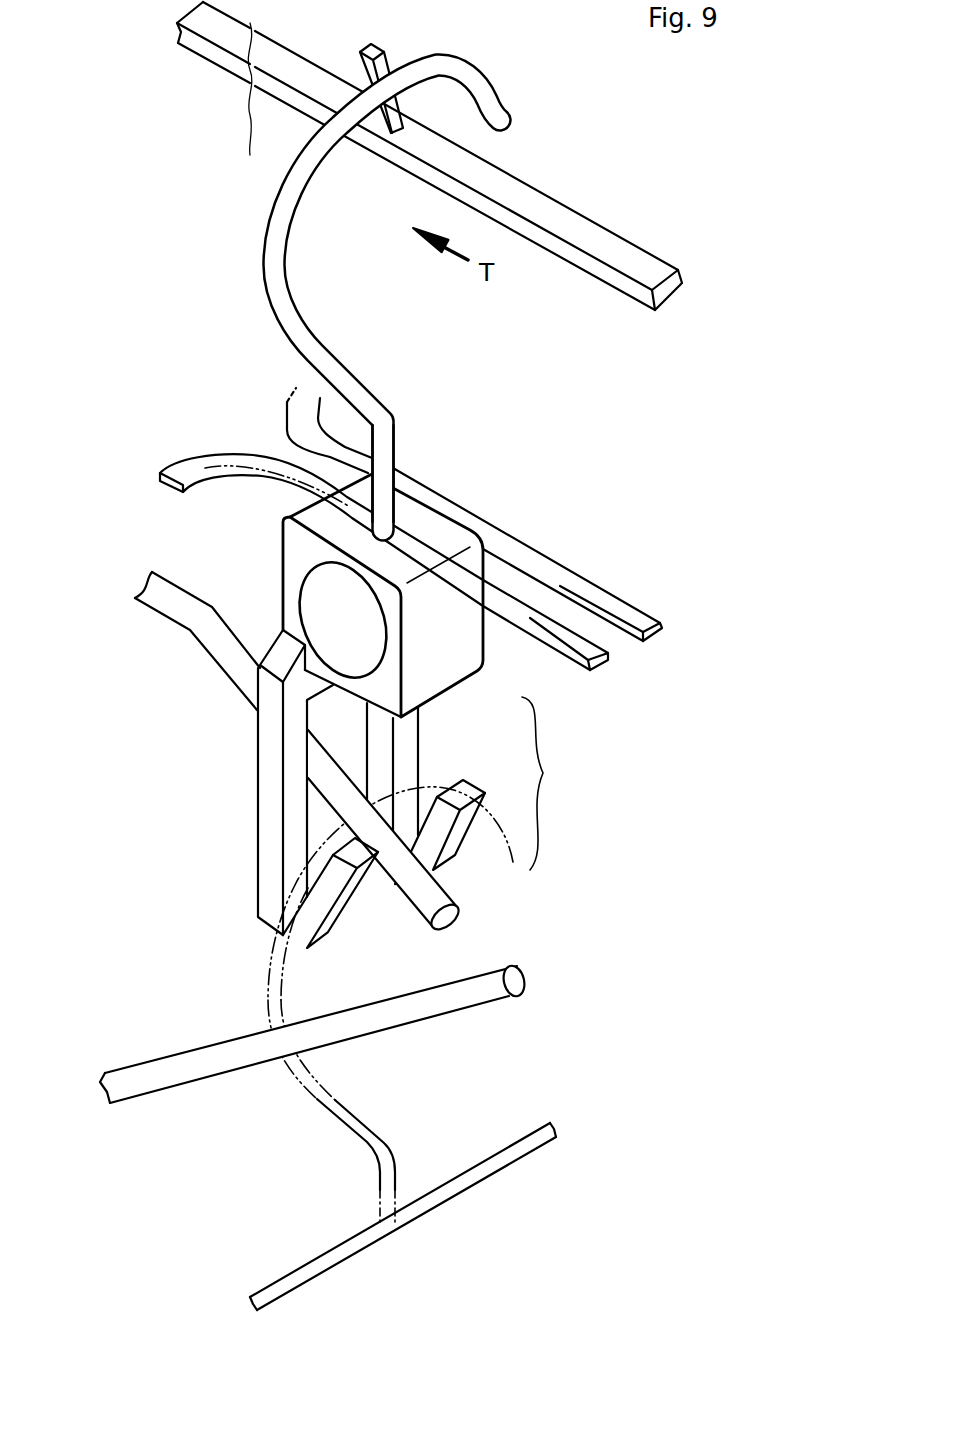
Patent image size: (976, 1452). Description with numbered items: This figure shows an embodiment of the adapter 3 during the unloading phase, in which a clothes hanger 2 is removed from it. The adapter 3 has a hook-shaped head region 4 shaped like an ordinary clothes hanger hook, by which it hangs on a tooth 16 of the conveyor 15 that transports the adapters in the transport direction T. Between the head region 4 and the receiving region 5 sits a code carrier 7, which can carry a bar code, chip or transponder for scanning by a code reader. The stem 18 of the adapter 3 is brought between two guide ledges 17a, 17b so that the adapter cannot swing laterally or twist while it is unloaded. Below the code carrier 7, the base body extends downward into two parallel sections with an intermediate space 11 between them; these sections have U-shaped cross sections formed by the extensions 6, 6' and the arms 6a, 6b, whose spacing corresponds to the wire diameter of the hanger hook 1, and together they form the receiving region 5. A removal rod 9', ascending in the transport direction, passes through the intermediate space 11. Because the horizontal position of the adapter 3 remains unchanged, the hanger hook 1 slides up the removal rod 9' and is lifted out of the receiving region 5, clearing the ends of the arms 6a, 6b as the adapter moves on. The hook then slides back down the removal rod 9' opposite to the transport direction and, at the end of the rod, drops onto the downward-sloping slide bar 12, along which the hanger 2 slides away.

The hanger hook 1 is at (492, 833).
The clothes hanger 2 is at (520, 1148).
The adapter 3 is at (92, 496).
The head region 4 is at (233, 325).
The receiving region 5 is at (546, 783).
The extension 6 is at (272, 782).
The extension 6' is at (411, 793).
The arm 6a is at (325, 895).
The arm 6b is at (438, 830).
The code carrier 7 is at (383, 595).
The removal rod 9' is at (194, 641).
The intermediate space 11 is at (333, 722).
The slide bar 12 is at (170, 1070).
The conveyor 15 is at (540, 207).
The tooth 16 is at (360, 62).
The guide ledge 17a is at (622, 612).
The guide ledge 17b is at (582, 647).
The stem 18 is at (384, 455).